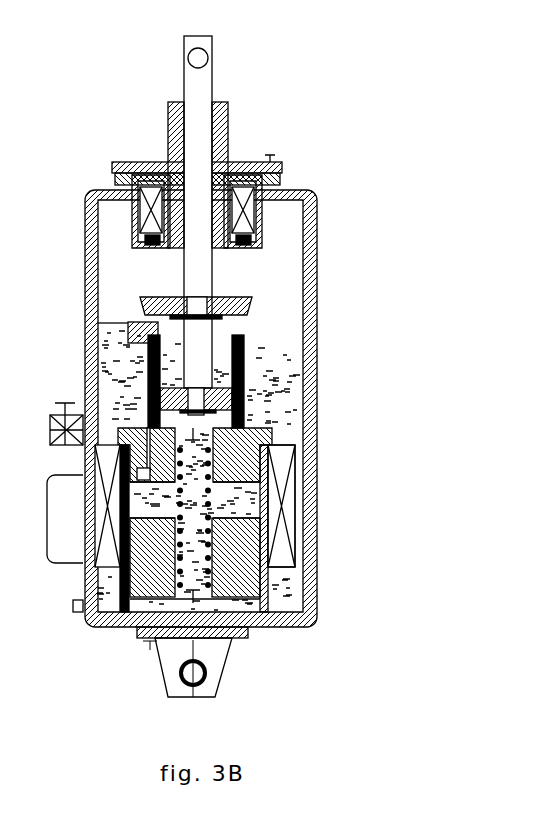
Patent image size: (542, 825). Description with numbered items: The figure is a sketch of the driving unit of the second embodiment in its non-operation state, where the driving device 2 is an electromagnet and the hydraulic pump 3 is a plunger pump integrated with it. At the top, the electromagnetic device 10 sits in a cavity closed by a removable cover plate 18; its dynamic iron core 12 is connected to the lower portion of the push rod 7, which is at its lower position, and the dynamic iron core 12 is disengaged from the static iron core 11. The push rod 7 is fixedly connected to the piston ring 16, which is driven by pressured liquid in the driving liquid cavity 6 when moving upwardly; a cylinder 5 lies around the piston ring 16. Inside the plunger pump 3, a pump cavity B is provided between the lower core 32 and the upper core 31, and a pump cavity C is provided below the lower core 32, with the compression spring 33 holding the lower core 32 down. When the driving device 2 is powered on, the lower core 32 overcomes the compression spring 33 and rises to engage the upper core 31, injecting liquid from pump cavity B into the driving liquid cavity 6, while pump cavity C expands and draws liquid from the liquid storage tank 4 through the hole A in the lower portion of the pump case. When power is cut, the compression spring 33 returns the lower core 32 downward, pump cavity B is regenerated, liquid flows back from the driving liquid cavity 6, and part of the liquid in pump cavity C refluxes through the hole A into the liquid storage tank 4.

The driving device 2 is at (280, 555).
The hydraulic pump 3 is at (277, 556).
The liquid storage tank 4 is at (310, 410).
The inner cylinder 5 is at (243, 347).
The driving liquid cavity 6 is at (247, 405).
The push rod 7 is at (202, 91).
The electromagnetic device 10 is at (283, 168).
The static iron core 11 is at (262, 222).
The dynamic iron core 12 is at (247, 298).
The piston ring 16 is at (162, 382).
The cover plate 18 is at (117, 162).
The upper core 31 is at (243, 443).
The lower core 32 is at (237, 533).
The compression spring 33 is at (165, 588).
The hole A is at (105, 622).
The pump cavity B is at (235, 507).
The pump cavity C is at (233, 605).